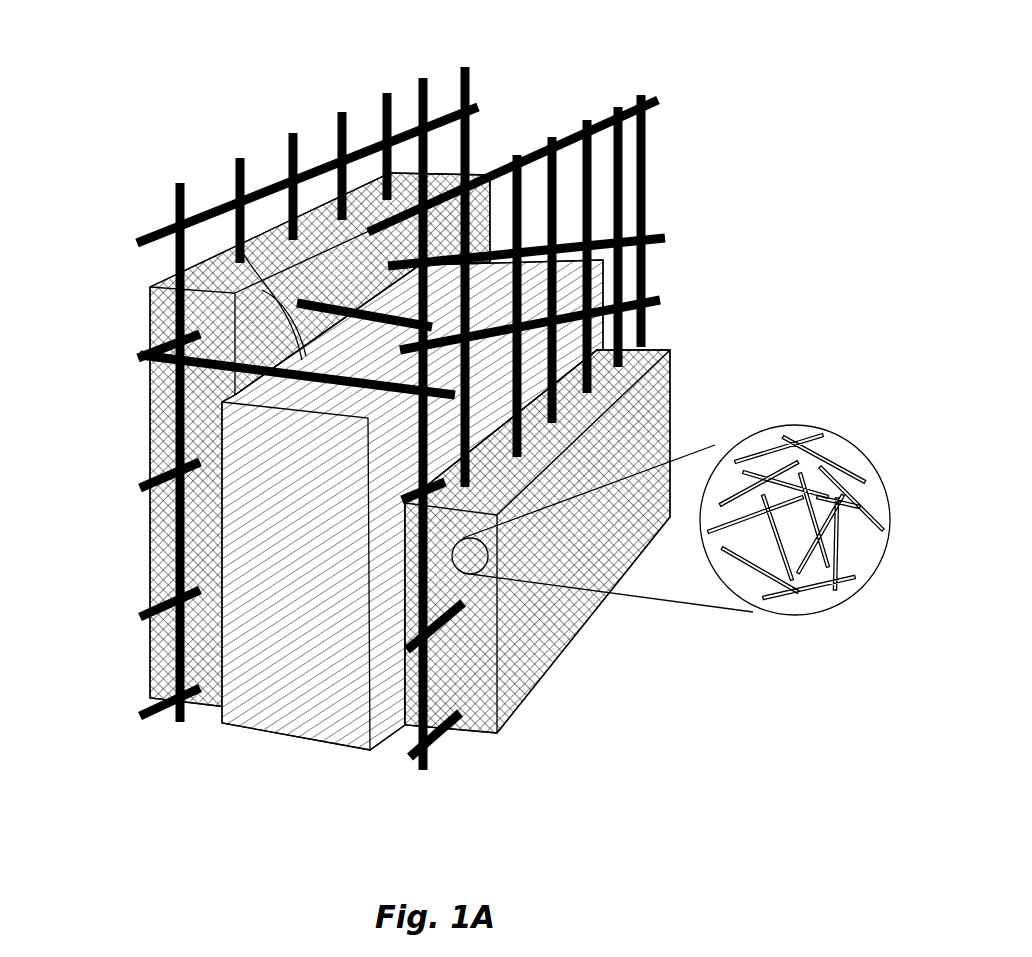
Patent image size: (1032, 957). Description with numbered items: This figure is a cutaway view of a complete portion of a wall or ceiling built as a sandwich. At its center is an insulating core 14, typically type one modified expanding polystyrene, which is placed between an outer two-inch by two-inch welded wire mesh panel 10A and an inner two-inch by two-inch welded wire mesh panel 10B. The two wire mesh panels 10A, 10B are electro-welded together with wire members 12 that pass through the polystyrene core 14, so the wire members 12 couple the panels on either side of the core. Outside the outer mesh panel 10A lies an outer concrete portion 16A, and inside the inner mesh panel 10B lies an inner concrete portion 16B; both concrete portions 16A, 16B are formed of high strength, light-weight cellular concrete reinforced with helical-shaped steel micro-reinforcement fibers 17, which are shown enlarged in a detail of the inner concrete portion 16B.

The outer welded wire mesh panel 10A is at (467, 90).
The inner welded wire mesh panel 10B is at (648, 140).
The wire members 12 is at (245, 250).
The insulating core 14 is at (307, 738).
The outer concrete portion 16A is at (150, 690).
The inner concrete portion 16B is at (588, 617).
The steel micro-reinforcement fibers 17 is at (807, 437).